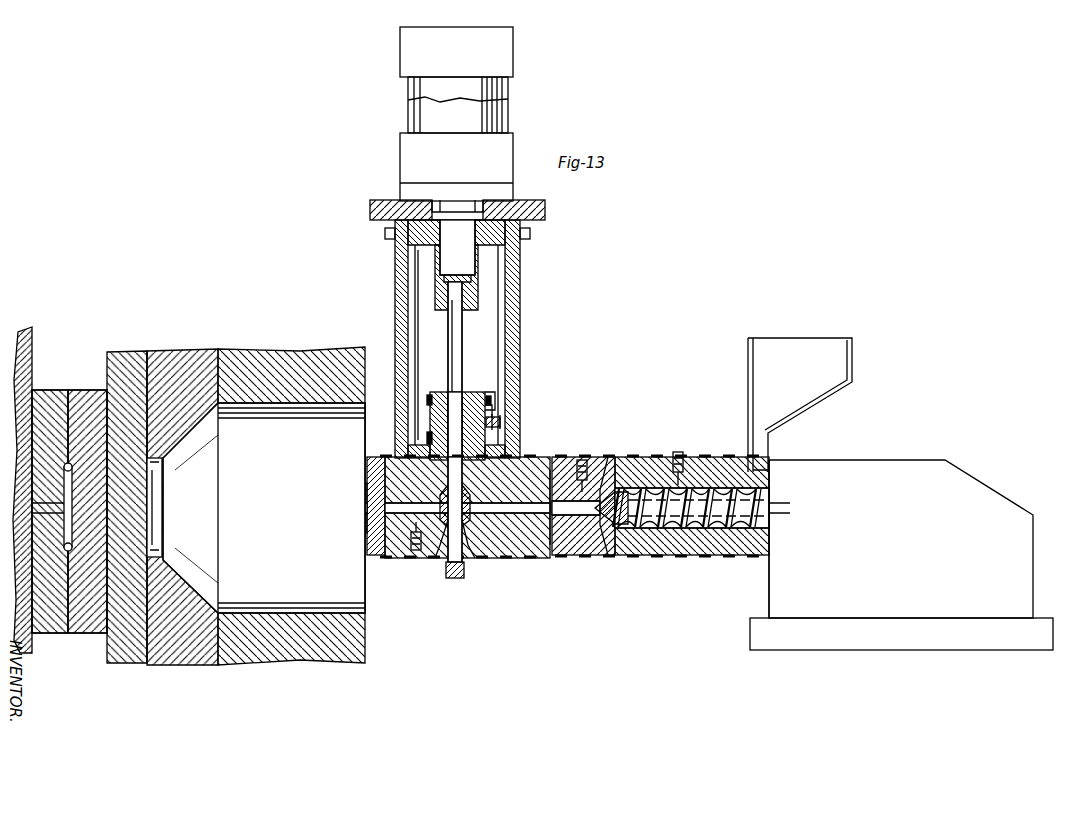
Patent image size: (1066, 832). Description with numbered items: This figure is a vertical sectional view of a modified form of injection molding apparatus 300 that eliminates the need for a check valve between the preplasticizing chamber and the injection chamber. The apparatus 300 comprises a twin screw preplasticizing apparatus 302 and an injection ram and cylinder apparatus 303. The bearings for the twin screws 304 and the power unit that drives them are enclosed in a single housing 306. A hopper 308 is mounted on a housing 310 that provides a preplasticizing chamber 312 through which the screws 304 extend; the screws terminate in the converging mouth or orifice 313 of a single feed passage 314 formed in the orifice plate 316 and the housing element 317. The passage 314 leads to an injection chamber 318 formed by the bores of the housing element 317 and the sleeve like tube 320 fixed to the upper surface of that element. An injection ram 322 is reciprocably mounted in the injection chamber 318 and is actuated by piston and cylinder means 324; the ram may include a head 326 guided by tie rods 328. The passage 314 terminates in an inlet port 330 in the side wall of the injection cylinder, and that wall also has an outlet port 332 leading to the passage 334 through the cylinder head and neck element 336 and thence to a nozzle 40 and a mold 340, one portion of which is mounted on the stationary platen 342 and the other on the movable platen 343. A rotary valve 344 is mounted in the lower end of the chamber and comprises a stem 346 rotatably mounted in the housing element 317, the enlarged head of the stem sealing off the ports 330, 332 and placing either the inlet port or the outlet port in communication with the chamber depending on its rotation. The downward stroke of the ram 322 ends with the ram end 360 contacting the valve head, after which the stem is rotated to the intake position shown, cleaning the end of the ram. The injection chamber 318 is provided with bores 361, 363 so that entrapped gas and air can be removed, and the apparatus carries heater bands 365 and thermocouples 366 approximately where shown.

The modified form of injection molding apparatus 300 is at (700, 306).
The twin screw preplasticizing apparatus 302 is at (730, 405).
The injection ram and cylinder apparatus 303 is at (362, 205).
The twin screws 304 is at (772, 508).
The housing 306 is at (916, 465).
The hopper 308 is at (852, 366).
The housing 310 is at (640, 470).
The preplasticizing chamber 312 is at (686, 540).
The converging mouth or orifice 313 is at (617, 448).
The feed passage 314 is at (580, 556).
The orifice plate 316 is at (626, 556).
The housing element 317 is at (540, 560).
The injection chamber 318 is at (470, 486).
The sleeve like tube 320 is at (490, 392).
The injection ram 322 is at (488, 405).
The piston and cylinder means 324 is at (522, 93).
The head 326 is at (505, 262).
The tie rods 328 is at (521, 285).
The inlet port 330 is at (472, 560).
The outlet port 332 is at (435, 560).
The passage 334 is at (362, 540).
The cylinder head and neck element 336 is at (258, 536).
The mold 340 is at (45, 633).
The stationary platen 342 is at (165, 660).
The movable platen 343 is at (30, 338).
The rotary valve 344 is at (515, 480).
The stem 346 is at (454, 562).
The ram end 360 is at (430, 418).
The bore 361 is at (445, 485).
The bore 363 is at (462, 378).
The heater bands 365 is at (492, 402).
The thermocouples 366 is at (500, 421).
The nozzle 40 is at (166, 545).